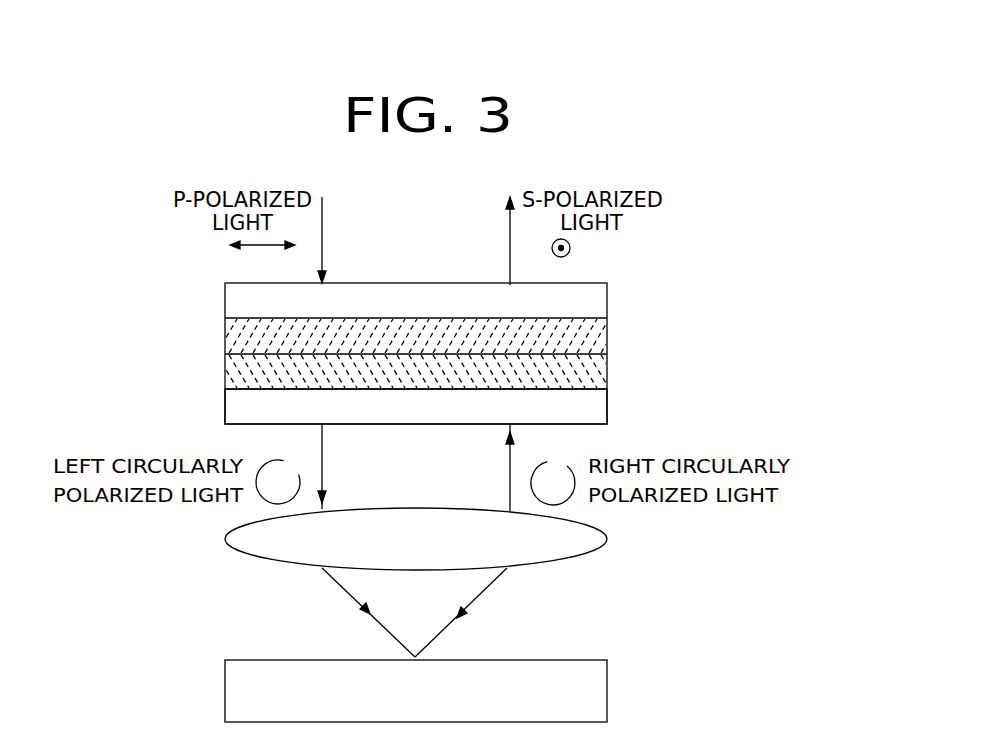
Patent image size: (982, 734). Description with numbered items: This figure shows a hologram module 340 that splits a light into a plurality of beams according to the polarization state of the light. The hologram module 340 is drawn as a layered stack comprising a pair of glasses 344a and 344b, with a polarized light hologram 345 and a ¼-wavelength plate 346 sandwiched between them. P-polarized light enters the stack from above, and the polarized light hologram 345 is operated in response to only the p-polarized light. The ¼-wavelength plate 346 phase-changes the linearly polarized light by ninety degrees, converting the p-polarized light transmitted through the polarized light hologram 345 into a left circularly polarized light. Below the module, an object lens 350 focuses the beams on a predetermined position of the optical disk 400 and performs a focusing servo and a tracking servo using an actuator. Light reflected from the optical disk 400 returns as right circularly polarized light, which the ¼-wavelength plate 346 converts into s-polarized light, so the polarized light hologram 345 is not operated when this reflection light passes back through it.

The hologram module 340 is at (765, 413).
The glass 344a is at (607, 300).
The polarized light hologram 345 is at (607, 337).
The ¼-wavelength plate 346 is at (607, 371).
The glass 344b is at (607, 405).
The object lens 350 is at (607, 542).
The optical disk 400 is at (607, 689).